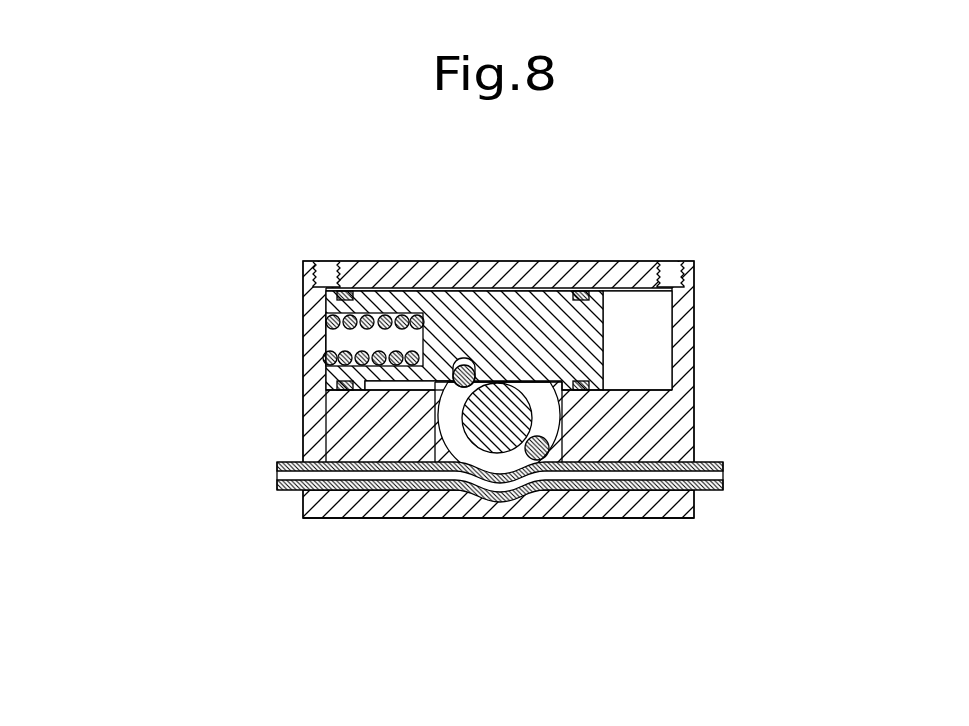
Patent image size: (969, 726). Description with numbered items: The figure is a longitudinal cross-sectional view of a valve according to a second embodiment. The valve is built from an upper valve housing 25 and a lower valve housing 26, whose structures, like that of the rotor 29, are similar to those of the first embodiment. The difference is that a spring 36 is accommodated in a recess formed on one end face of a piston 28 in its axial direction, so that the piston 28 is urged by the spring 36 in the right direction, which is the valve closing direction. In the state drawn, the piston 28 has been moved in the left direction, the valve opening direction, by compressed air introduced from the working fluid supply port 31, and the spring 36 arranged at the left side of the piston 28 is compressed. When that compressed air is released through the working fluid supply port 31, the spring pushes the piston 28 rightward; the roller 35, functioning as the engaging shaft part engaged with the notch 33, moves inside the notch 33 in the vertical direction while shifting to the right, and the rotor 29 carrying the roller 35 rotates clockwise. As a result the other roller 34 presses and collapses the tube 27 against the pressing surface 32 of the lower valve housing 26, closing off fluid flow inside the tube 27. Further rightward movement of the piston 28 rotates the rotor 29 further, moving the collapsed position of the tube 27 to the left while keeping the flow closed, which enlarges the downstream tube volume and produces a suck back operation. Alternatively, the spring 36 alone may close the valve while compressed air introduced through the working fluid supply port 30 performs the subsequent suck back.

The upper valve housing 25 is at (688, 330).
The lower valve housing 26 is at (327, 508).
The tube 27 is at (715, 462).
The piston 28 is at (462, 327).
The rotor 29 is at (497, 437).
The working fluid supply port 30 is at (325, 260).
The working fluid supply port 31 is at (672, 260).
The pressing surface 32 is at (523, 490).
The notch 33 is at (458, 358).
The roller 34 is at (545, 462).
The roller 35 is at (440, 392).
The spring 36 is at (326, 358).